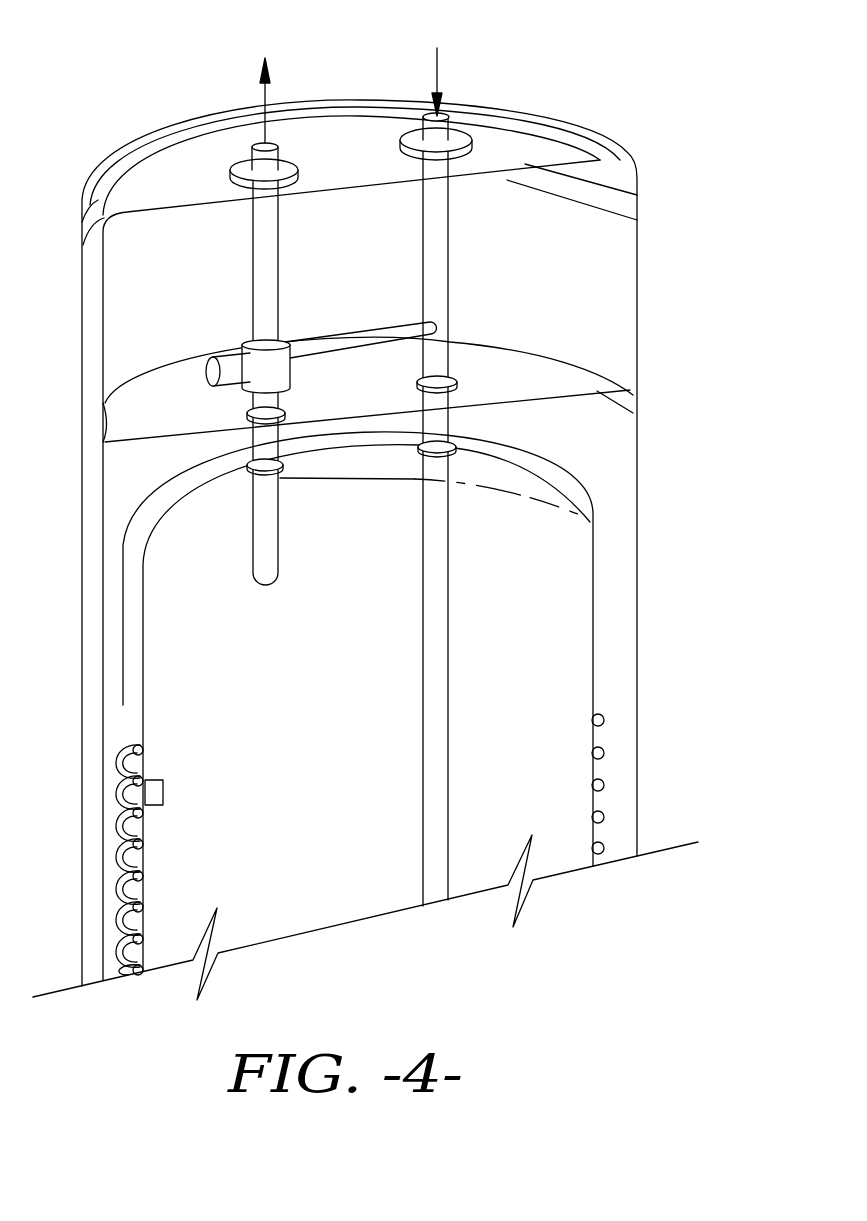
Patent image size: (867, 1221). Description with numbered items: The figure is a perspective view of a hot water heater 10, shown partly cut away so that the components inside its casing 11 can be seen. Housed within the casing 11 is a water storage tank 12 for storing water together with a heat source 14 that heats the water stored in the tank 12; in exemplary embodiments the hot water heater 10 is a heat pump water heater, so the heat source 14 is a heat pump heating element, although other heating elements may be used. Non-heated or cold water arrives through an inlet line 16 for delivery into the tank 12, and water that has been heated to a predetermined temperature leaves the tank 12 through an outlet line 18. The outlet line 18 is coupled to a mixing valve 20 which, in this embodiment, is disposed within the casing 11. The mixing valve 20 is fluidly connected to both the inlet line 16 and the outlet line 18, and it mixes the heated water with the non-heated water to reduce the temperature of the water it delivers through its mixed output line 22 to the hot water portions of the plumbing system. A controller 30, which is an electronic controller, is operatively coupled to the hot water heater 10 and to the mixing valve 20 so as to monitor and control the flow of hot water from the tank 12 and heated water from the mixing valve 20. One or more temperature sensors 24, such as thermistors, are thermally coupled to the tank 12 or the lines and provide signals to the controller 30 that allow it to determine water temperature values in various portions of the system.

The hot water heater 10 is at (385, 500).
The casing 11 is at (656, 345).
The water storage tank 12 is at (357, 800).
The heat source 14 is at (607, 762).
The inlet line 16 is at (457, 124).
The outlet line 18 is at (279, 537).
The mixing valve 20 is at (245, 346).
The mixed output line 22 is at (248, 160).
The temperature sensor 24 is at (165, 792).
The controller 30 is at (201, 372).